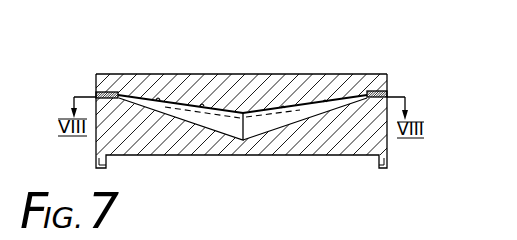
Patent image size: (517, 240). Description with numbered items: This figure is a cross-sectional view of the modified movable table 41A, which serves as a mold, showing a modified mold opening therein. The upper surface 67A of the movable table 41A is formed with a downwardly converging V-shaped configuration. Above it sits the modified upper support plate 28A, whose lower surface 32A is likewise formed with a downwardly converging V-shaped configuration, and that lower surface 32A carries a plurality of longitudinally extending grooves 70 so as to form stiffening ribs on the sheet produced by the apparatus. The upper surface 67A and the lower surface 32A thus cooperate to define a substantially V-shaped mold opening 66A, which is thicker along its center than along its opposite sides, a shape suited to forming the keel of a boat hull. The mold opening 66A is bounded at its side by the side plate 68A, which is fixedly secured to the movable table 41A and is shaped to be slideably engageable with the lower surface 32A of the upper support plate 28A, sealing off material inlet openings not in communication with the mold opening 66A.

The upper support plate 28A is at (168, 88).
The lower surface 32A is at (228, 108).
The movable table 41A is at (193, 142).
The mold opening 66A is at (314, 108).
The side plate 68A is at (97, 92).
The upper surface 67A is at (282, 126).
The grooves 70 is at (153, 112).